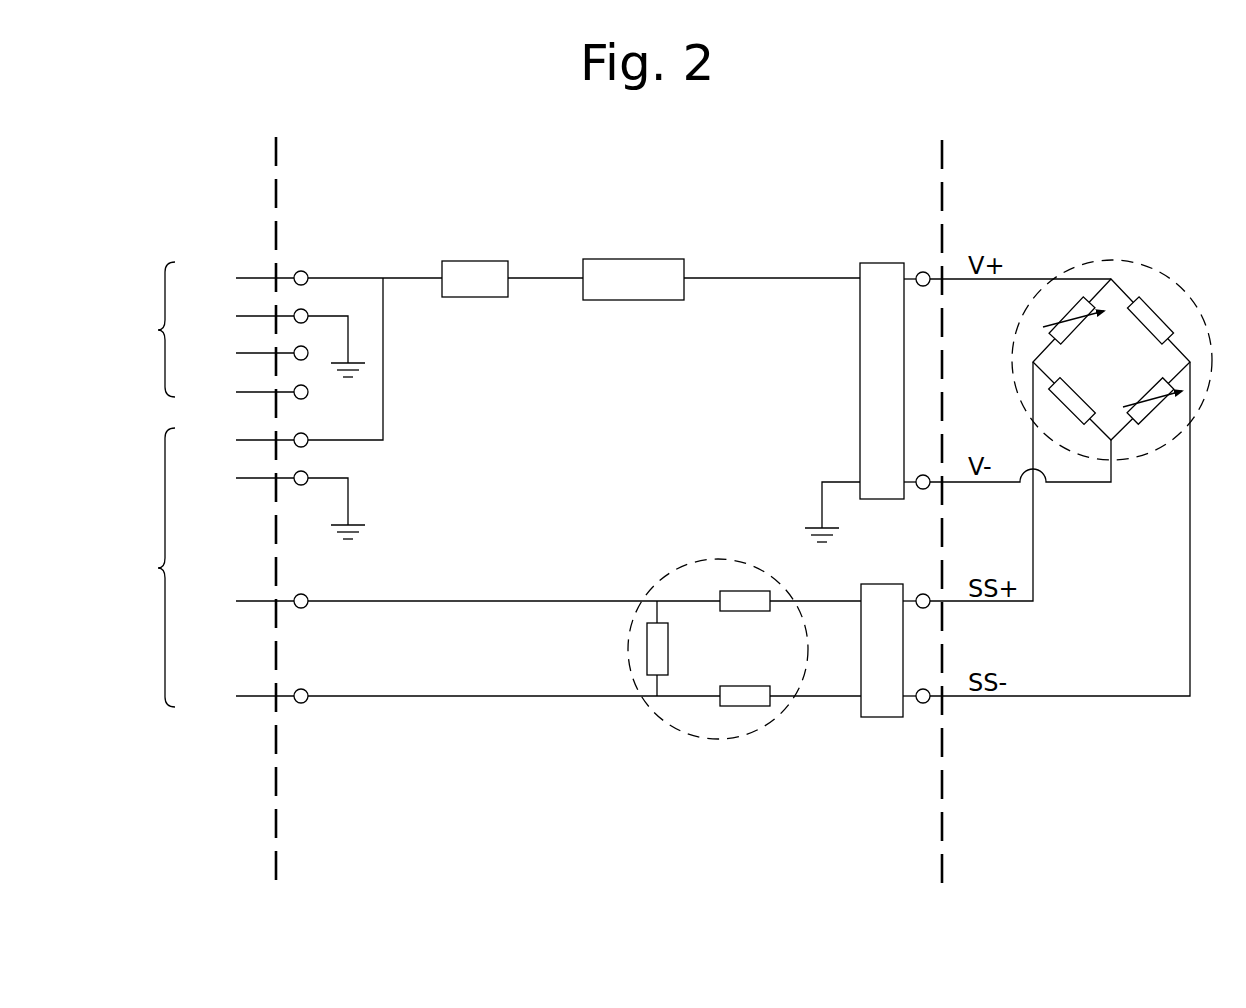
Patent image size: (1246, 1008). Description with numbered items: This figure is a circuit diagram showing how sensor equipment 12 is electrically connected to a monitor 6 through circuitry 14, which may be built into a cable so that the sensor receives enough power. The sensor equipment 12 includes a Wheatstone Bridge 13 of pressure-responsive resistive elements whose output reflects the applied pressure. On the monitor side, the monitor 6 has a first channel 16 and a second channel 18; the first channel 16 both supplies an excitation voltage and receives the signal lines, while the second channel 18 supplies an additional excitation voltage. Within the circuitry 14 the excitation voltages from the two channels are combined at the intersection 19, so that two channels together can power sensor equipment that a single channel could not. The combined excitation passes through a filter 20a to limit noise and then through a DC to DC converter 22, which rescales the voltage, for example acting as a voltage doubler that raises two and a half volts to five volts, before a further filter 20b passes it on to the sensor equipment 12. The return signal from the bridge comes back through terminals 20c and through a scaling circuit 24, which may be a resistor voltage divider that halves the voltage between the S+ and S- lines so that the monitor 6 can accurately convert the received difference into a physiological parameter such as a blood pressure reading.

The monitor 6 is at (186, 185).
The sensor equipment 12 is at (1040, 186).
The Wheatstone Bridge 13 is at (1115, 260).
The circuitry 14 is at (576, 786).
The first channel 16 is at (158, 568).
The second channel 18 is at (158, 330).
The intersection 19 is at (383, 277).
The filter 20a is at (476, 261).
The filter 20b is at (881, 263).
The terminal block 20c is at (883, 584).
The DC to DC converter 22 is at (634, 259).
The scaling circuit 24 is at (725, 558).